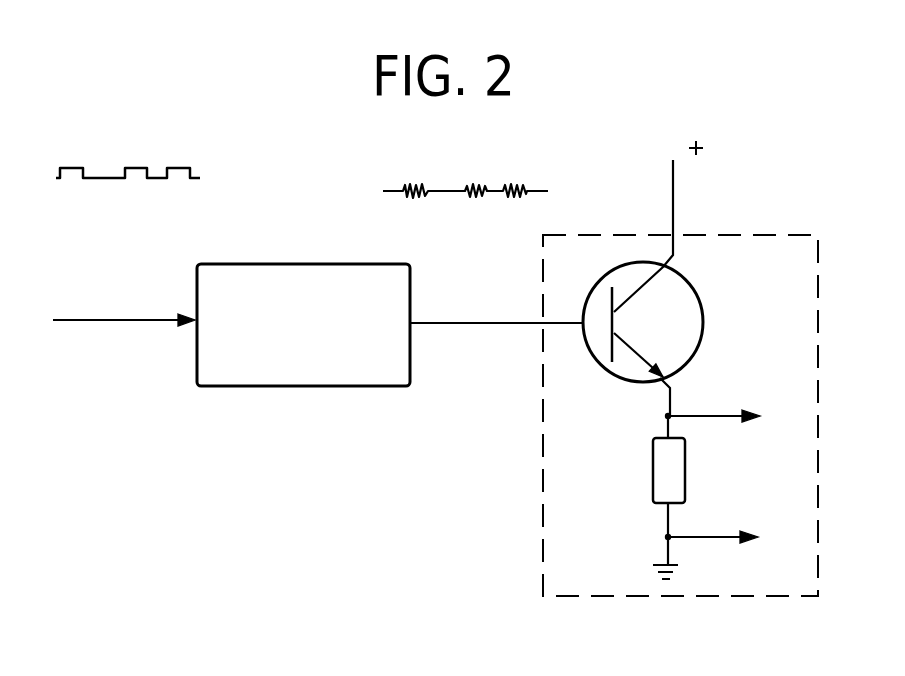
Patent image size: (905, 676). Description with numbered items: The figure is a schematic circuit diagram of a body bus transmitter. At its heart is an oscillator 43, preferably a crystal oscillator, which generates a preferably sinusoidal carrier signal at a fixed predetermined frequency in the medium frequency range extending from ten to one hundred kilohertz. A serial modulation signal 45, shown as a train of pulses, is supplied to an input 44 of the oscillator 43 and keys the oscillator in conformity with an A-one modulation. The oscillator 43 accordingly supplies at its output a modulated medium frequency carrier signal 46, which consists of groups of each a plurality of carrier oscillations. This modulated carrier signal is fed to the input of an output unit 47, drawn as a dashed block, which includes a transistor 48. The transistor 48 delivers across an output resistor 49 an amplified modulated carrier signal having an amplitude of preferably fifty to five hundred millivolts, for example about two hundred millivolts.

The oscillator 43 is at (255, 376).
The input 44 is at (118, 322).
The serial modulation signal 45 is at (140, 167).
The modulated medium frequency carrier signal 46 is at (420, 182).
The output unit 47 is at (730, 585).
The transistor 48 is at (692, 303).
The output resistor 49 is at (655, 458).